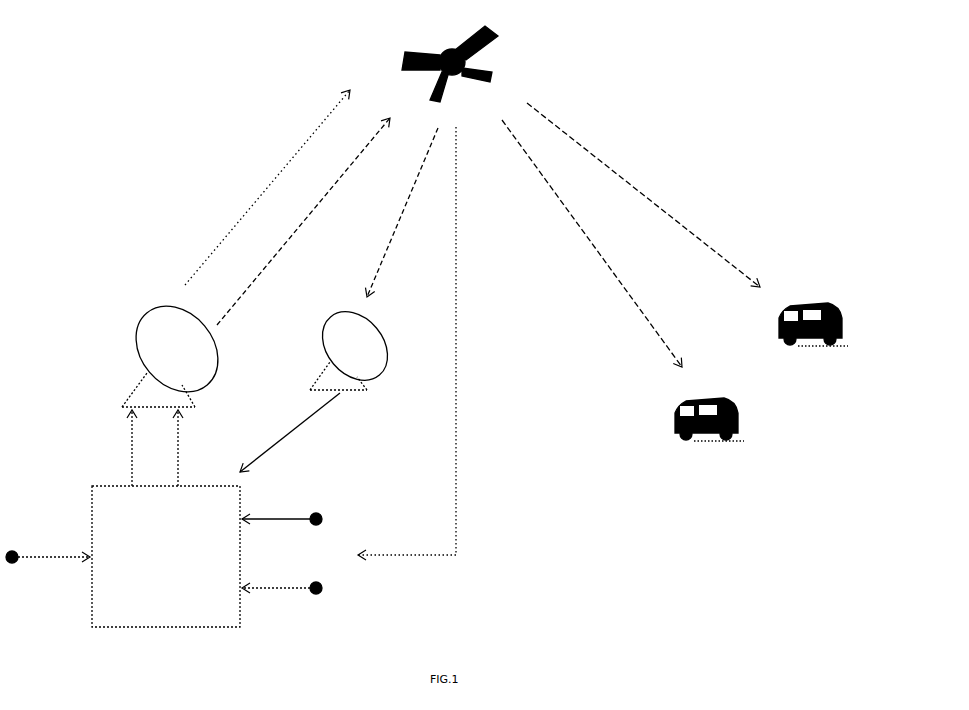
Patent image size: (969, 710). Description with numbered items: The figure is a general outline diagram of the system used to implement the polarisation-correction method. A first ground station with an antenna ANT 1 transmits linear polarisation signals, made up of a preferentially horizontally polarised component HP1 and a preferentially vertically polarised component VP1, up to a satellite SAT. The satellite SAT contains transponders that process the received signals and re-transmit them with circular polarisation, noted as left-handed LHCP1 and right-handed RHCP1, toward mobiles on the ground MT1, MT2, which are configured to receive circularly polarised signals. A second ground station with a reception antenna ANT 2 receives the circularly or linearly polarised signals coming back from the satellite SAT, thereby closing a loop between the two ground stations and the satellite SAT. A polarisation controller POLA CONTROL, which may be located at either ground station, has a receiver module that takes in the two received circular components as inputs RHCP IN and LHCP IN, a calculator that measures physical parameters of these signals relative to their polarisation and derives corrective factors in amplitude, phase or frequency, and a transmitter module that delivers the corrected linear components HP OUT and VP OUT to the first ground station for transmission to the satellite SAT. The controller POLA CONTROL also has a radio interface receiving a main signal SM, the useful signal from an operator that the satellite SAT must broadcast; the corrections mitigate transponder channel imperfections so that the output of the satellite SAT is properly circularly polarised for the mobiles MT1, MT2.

The satellite SAT is at (503, 42).
The horizontally polarised linear component HP1 is at (290, 150).
The vertically polarised linear component VP1 is at (272, 245).
The left-handed circular polarisation LHCP1 is at (622, 170).
The right-handed circular polarisation RHCP1 is at (600, 272).
The mobile station MT1 is at (833, 345).
The mobile station MT2 is at (727, 448).
The first ground station antenna ANT 1 is at (177, 349).
The reception antenna of second ground station ANT 2 is at (339, 300).
The corrected vertical linear component VP OUT is at (105, 448).
The corrected horizontal linear component HP OUT is at (205, 448).
The polarisation controller POLA CONTROL is at (166, 556).
The main signal SM is at (48, 542).
The right-handed circular polarisation input RHCP IN is at (282, 507).
The left-handed circular polarisation input LHCP IN is at (282, 600).